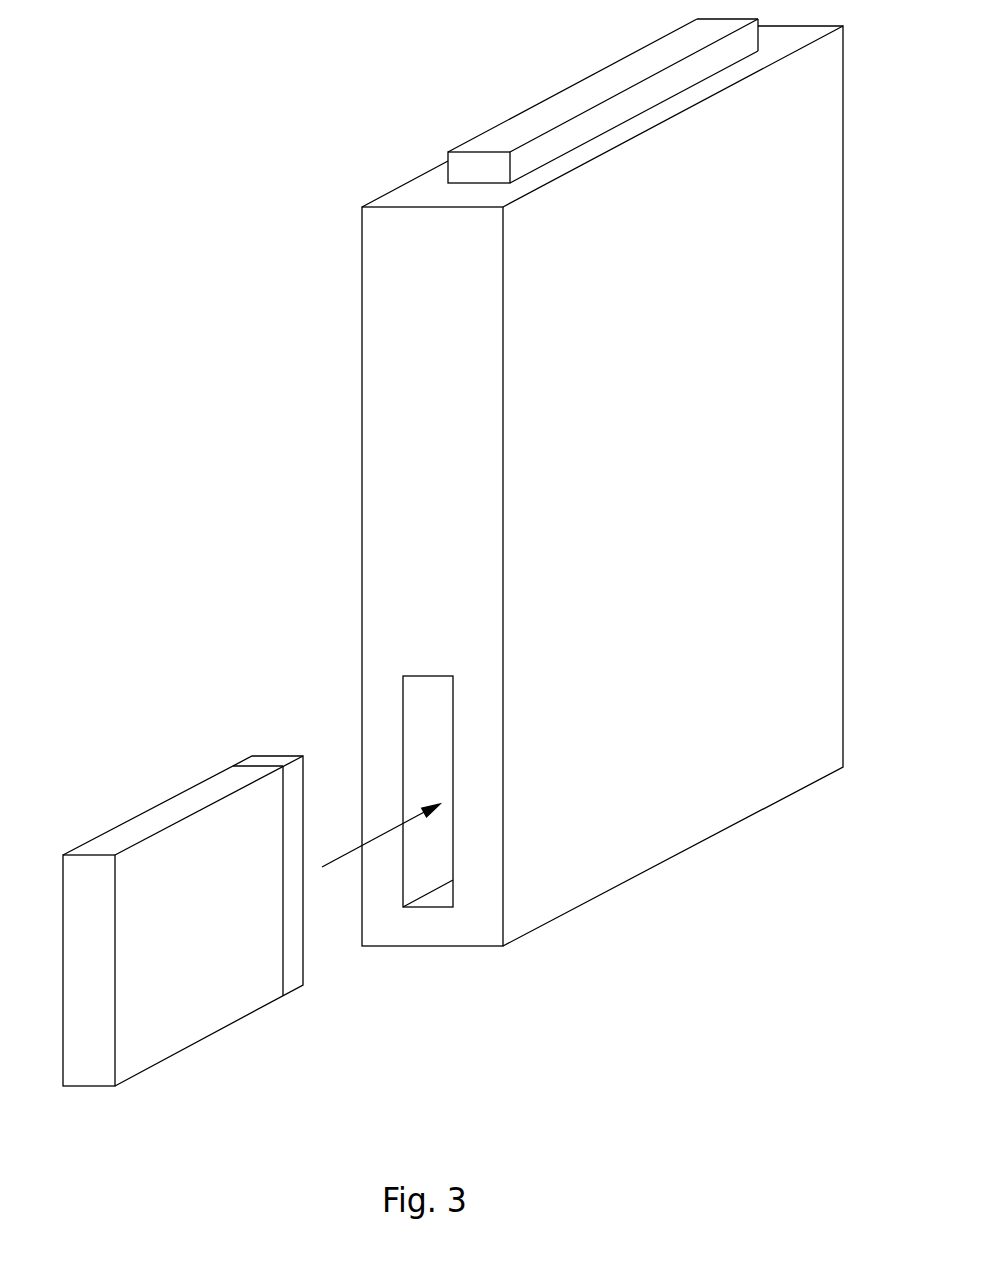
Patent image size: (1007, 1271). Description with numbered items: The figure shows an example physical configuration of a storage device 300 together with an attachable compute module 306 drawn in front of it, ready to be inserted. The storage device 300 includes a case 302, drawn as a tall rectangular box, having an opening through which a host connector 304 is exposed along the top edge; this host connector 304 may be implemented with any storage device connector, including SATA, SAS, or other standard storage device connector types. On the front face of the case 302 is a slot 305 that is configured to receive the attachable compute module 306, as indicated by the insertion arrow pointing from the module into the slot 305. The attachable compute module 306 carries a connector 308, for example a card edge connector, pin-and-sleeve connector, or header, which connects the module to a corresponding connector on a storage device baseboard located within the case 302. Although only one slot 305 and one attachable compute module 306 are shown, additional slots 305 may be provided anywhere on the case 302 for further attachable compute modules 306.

The storage device 300 is at (559, 480).
The case 302 is at (368, 443).
The host connector 304 is at (622, 70).
The slot 305 is at (432, 685).
The attachable compute module 306 is at (177, 889).
The connector 308 is at (275, 762).